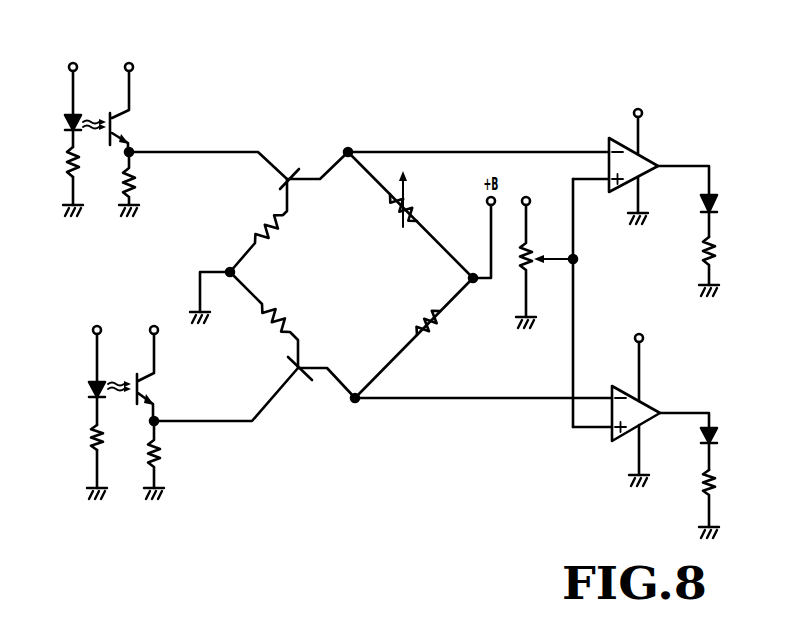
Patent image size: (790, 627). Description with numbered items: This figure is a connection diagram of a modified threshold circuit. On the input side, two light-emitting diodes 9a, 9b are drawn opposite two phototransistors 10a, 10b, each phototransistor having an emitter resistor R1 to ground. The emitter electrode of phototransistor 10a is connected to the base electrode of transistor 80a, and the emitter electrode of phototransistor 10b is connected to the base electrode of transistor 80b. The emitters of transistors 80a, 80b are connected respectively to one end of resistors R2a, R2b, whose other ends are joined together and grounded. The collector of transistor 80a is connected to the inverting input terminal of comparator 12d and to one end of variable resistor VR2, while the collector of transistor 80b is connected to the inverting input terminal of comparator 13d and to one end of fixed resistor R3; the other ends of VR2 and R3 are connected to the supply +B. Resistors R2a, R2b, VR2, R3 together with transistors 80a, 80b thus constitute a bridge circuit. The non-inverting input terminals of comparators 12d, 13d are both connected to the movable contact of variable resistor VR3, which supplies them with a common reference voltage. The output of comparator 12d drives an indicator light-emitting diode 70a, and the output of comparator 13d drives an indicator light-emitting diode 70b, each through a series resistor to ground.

The light emitting diode 9a is at (83, 114).
The phototransistor 10a is at (122, 128).
The light emitting diode 9b is at (106, 380).
The phototransistor 10b is at (148, 390).
The emitter resistor R1 is at (135, 186).
The transistor 80a is at (293, 184).
The transistor 80b is at (307, 367).
The resistor R2a is at (268, 244).
The resistor R2b is at (287, 315).
The variable resistor VR2 is at (400, 216).
The fixed resistor R3 is at (420, 330).
The variable resistor VR3 is at (522, 271).
The comparator 12d is at (647, 157).
The comparator 13d is at (650, 408).
The indicator light emitting diode 70a is at (702, 203).
The indicator light emitting diode 70b is at (702, 440).